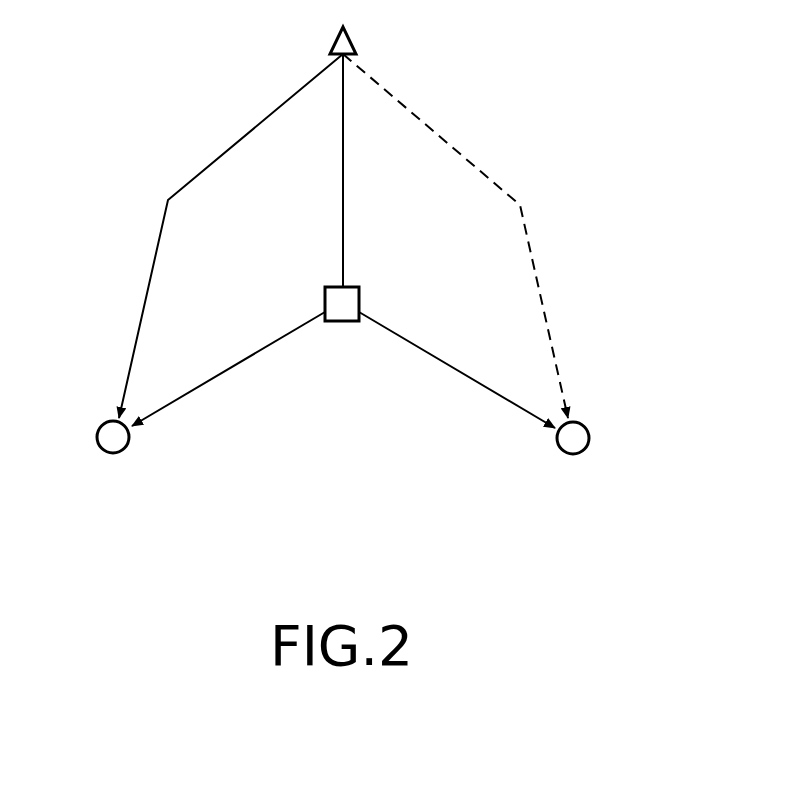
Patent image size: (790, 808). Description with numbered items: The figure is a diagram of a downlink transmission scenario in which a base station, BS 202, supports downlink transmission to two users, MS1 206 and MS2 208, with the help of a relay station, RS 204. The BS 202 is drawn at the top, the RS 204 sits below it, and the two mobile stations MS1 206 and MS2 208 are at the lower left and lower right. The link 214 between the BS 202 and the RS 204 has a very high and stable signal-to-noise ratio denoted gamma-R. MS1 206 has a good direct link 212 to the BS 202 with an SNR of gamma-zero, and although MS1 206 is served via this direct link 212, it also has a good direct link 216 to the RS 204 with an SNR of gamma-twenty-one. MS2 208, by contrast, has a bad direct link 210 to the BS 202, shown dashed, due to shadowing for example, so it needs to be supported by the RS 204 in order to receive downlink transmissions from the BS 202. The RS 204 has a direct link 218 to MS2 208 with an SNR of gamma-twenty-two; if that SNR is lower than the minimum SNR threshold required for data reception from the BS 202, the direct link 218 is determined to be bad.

The BS 202 is at (387, 41).
The RS 204 is at (388, 304).
The MS1 206 is at (104, 455).
The MS2 208 is at (568, 457).
The direct link 210 is at (478, 168).
The direct link 212 is at (210, 163).
The link 214 is at (342, 176).
The direct link 216 is at (243, 362).
The direct link 218 is at (460, 373).